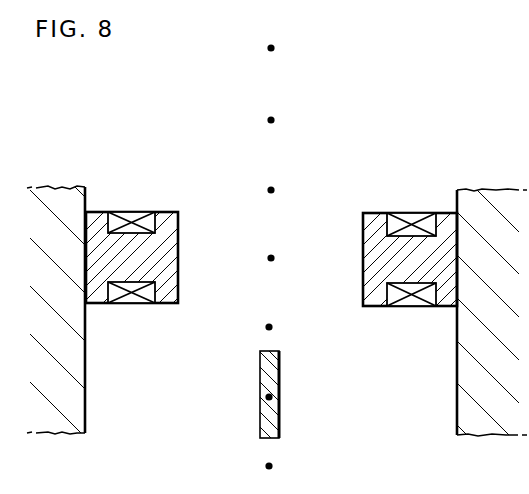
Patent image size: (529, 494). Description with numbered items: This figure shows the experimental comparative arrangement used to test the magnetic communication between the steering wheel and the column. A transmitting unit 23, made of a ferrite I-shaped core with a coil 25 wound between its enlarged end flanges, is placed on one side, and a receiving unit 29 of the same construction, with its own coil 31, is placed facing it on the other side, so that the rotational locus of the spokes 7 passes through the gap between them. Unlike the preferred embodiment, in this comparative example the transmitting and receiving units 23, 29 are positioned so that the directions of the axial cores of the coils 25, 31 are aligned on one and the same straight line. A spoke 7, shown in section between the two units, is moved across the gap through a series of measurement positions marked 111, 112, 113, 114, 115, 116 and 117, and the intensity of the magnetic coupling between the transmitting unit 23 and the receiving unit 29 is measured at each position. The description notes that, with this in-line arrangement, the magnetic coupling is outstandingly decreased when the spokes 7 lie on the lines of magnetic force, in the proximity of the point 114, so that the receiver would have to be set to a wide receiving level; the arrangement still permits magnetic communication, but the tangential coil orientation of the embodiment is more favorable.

The spokes 7 is at (281, 424).
The transmitting unit 23 is at (415, 254).
The coil 25 is at (400, 306).
The receiving unit 29 is at (138, 252).
The coil 31 is at (140, 301).
The armature position 111 is at (292, 48).
The armature position 112 is at (292, 120).
The armature position 113 is at (292, 190).
The point 114 is at (292, 258).
The armature position 115 is at (290, 327).
The armature position 116 is at (290, 397).
The armature position 117 is at (290, 466).